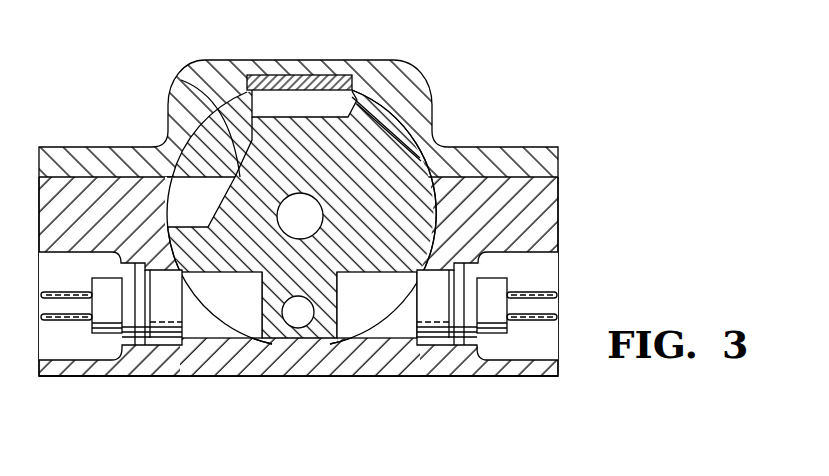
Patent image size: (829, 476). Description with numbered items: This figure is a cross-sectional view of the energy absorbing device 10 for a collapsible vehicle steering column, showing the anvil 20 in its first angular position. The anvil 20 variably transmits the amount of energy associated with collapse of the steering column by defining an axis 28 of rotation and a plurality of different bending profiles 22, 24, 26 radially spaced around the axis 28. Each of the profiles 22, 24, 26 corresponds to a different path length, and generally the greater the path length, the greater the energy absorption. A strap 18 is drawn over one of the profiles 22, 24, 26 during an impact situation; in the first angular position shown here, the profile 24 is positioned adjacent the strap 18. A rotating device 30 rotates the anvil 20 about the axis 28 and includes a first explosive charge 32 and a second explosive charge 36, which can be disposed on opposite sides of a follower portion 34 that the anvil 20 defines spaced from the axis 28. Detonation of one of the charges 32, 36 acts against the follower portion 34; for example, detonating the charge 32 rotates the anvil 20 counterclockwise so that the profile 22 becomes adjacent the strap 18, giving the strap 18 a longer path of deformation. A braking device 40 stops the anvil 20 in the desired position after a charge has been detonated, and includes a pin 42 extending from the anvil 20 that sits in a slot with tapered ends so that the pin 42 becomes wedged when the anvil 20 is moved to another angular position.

The energy absorbing device 10 is at (527, 90).
The strap 18 is at (262, 60).
The anvil 20 is at (377, 265).
The bending profile 22 is at (381, 123).
The bending profile 24 is at (316, 117).
The bending profile 26 is at (181, 80).
The axis 28 is at (290, 207).
The rotating device 30 is at (506, 398).
The first explosive charge 32 is at (120, 342).
The follower portion 34 is at (266, 336).
The second explosive charge 36 is at (488, 278).
The braking device 40 is at (272, 382).
The pin 42 is at (305, 314).